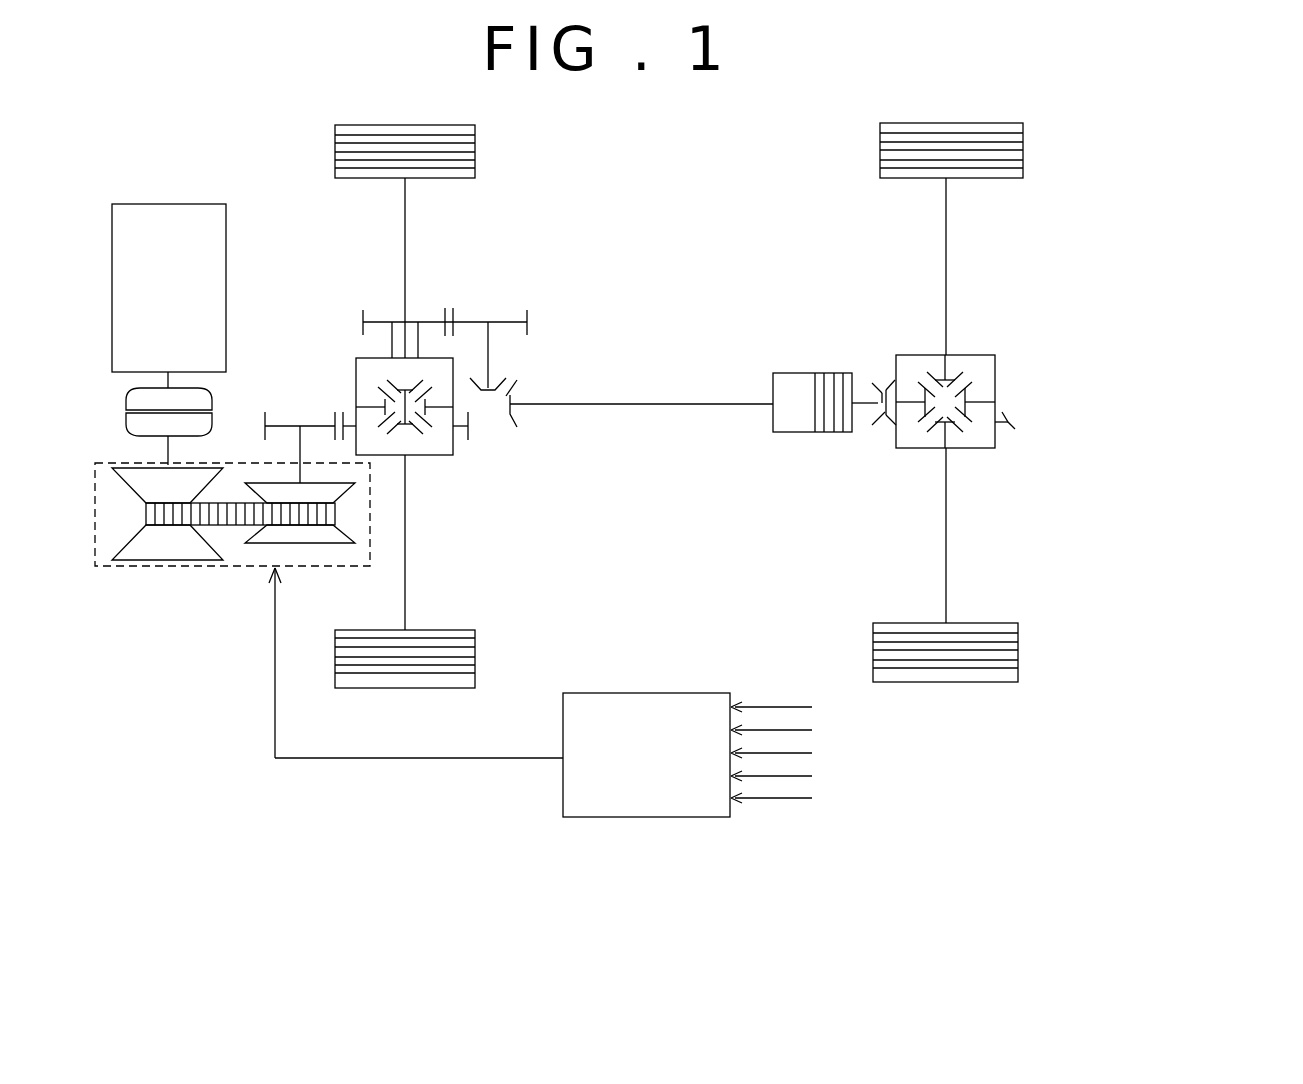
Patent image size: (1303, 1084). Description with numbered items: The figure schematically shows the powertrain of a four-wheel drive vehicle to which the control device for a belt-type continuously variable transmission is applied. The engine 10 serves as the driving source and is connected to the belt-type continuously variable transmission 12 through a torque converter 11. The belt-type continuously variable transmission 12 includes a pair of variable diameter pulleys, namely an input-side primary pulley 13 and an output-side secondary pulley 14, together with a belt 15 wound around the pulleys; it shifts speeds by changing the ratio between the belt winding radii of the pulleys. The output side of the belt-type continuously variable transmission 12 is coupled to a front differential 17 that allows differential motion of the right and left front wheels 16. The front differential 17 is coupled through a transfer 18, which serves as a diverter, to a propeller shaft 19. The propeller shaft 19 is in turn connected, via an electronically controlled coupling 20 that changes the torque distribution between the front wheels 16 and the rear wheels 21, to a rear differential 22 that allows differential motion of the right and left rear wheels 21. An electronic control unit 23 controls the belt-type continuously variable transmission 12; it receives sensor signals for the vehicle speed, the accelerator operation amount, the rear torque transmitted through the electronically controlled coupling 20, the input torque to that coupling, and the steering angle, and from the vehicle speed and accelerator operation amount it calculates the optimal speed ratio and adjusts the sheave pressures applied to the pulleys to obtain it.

The engine 10 is at (203, 197).
The torque converter 11 is at (214, 392).
The belt-type continuously variable transmission 12 is at (131, 568).
The primary pulley 13 is at (175, 550).
The secondary pulley 14 is at (305, 535).
The belt 15 is at (228, 520).
The front wheels 16 is at (475, 145).
The front differential 17 is at (437, 455).
The transfer 18 is at (520, 377).
The propeller shaft 19 is at (620, 405).
The electronically controlled coupling 20 is at (798, 432).
The rear wheels 21 is at (878, 148).
The rear differential 22 is at (913, 353).
The electronic control unit 23 is at (678, 817).